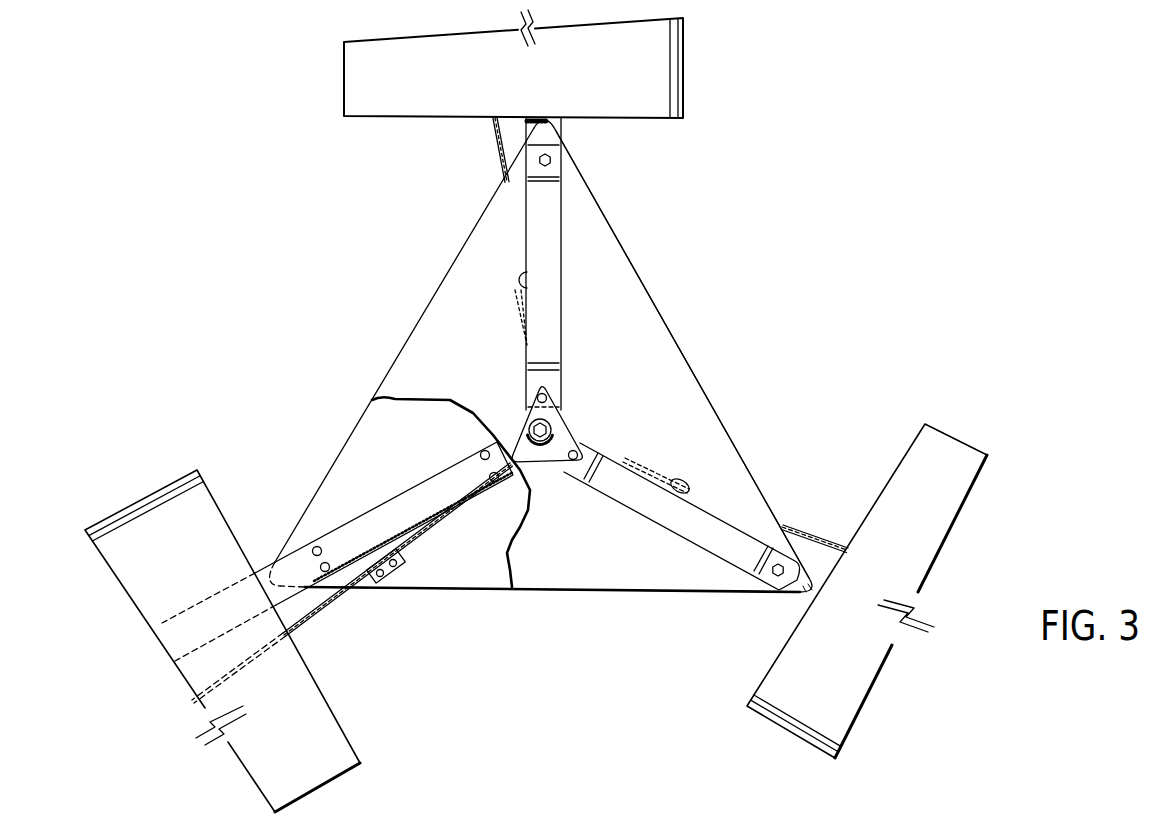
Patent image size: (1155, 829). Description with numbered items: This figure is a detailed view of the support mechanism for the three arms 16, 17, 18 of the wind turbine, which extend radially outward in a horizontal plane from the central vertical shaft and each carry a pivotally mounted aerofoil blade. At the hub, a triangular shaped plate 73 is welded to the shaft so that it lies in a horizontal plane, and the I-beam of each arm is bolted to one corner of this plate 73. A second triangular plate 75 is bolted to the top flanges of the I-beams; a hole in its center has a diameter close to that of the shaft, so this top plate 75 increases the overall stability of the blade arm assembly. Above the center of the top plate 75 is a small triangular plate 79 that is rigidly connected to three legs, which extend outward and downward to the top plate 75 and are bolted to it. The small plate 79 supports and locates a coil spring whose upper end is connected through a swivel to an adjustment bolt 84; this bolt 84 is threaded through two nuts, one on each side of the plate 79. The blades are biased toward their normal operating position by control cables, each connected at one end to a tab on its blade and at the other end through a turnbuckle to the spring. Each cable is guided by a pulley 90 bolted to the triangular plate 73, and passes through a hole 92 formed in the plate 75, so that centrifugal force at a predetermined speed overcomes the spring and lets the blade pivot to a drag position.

The arm 16 is at (868, 662).
The arm 17 is at (660, 60).
The arm 18 is at (143, 592).
The triangular shaped plate 73 is at (367, 438).
The second triangular plate 75 is at (541, 356).
The small triangular plate 79 is at (573, 420).
The adjustment bolt 84 is at (530, 417).
The pulley 90 is at (397, 570).
The hole 92 is at (688, 482).